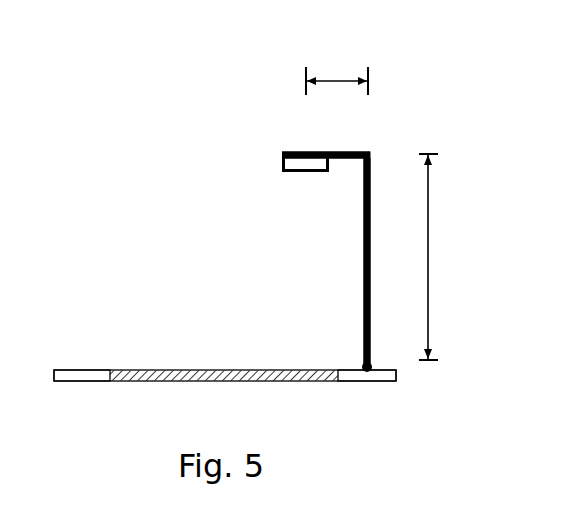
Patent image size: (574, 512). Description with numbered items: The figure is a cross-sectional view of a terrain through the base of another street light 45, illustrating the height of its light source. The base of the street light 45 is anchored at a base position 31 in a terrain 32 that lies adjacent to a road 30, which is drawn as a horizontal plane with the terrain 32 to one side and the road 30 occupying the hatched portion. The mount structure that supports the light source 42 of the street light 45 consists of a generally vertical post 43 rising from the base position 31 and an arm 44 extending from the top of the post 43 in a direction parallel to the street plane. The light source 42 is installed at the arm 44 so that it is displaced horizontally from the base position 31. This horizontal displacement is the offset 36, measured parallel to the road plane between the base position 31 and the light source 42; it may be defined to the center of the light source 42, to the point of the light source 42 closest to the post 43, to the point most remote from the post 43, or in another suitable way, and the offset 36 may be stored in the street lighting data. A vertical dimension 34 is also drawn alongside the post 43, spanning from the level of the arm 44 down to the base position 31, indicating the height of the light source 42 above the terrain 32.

The road 30 is at (243, 380).
The base position 31 is at (373, 373).
The terrain 32 is at (79, 380).
The height of contact element 34 is at (428, 225).
The offset 36 is at (337, 81).
The light source 42 is at (282, 167).
The post 43 is at (363, 261).
The arm 44 is at (347, 152).
The street light 45 is at (262, 137).